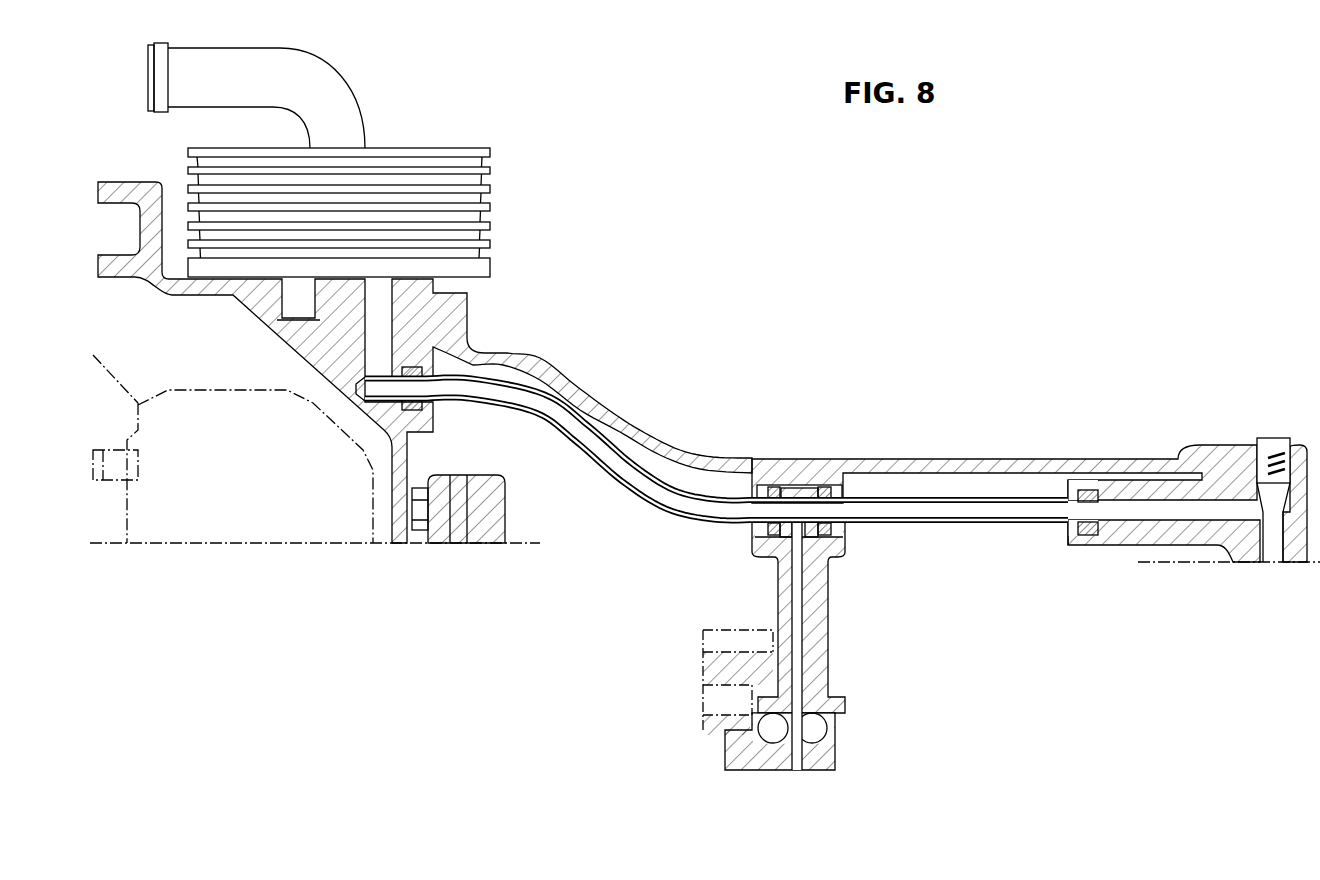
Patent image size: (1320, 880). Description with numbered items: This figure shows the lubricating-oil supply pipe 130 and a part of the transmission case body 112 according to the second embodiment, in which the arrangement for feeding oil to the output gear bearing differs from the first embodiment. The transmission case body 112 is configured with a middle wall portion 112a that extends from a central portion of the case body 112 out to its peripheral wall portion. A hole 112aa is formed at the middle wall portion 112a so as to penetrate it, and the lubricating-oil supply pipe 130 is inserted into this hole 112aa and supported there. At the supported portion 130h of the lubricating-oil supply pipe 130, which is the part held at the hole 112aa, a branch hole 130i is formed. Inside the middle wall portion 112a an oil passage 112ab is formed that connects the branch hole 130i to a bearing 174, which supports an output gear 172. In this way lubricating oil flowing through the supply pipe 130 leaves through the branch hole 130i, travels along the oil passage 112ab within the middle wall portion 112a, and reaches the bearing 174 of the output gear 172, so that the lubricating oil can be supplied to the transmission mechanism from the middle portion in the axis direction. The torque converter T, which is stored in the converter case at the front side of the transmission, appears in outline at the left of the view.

The transmission case body 112 is at (777, 459).
The middle wall portion 112a is at (822, 585).
The hole 112aa is at (846, 479).
The oil passage 112ab is at (796, 642).
The lubricating-oil supply pipe 130 is at (720, 527).
The supported portion 130h is at (811, 487).
The branch hole 130i is at (788, 533).
The output gear 172 is at (703, 660).
The bearing 174 is at (790, 723).
The torque converter T is at (214, 440).